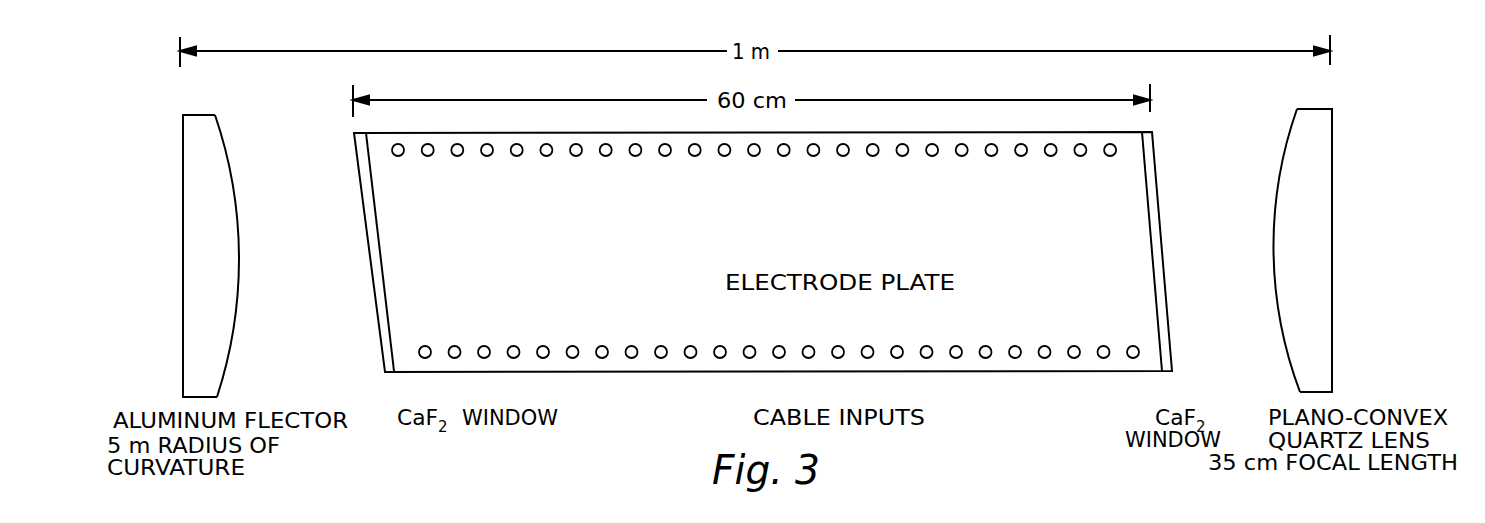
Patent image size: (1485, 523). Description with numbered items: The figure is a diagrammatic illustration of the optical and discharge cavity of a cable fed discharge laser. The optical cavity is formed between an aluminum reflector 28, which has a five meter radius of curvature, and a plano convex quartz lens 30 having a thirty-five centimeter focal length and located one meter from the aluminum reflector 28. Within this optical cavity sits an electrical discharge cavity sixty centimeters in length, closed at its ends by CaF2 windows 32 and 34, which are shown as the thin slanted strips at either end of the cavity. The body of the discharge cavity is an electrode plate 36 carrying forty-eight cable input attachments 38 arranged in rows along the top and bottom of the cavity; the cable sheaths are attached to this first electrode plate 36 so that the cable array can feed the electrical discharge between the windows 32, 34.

The aluminum reflector 28 is at (217, 397).
The plano convex quartz lens 30 is at (1328, 392).
The CaF2 window 32 is at (386, 372).
The CaF2 window 34 is at (1166, 371).
The electrode plate 36 is at (705, 248).
The cable input attachments 38 is at (750, 358).